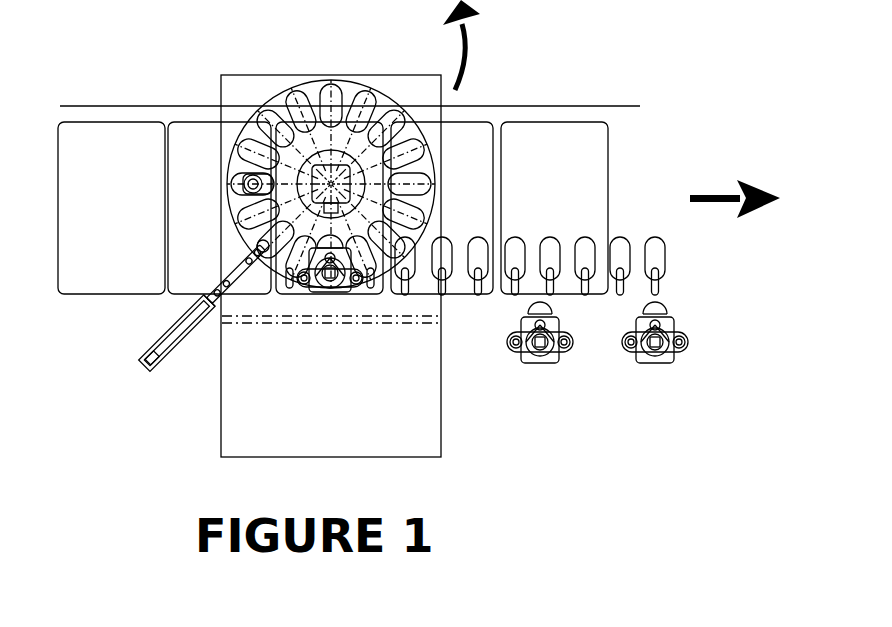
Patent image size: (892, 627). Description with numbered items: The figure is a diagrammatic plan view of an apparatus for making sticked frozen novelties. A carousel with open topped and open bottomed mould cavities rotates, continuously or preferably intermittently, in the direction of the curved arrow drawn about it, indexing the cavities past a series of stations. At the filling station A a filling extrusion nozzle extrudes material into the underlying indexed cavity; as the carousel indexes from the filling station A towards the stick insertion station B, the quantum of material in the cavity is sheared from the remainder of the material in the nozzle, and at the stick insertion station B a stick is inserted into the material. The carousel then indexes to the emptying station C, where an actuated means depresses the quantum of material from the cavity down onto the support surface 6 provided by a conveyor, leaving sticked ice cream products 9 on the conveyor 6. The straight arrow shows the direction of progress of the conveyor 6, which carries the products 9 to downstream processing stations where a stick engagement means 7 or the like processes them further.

The support surface 6 is at (101, 267).
The stick engagement means 7 is at (597, 365).
The sticked ice cream product 9 is at (478, 238).
The filling station A is at (232, 182).
The stick insertion station B is at (262, 258).
The emptying station C is at (350, 290).